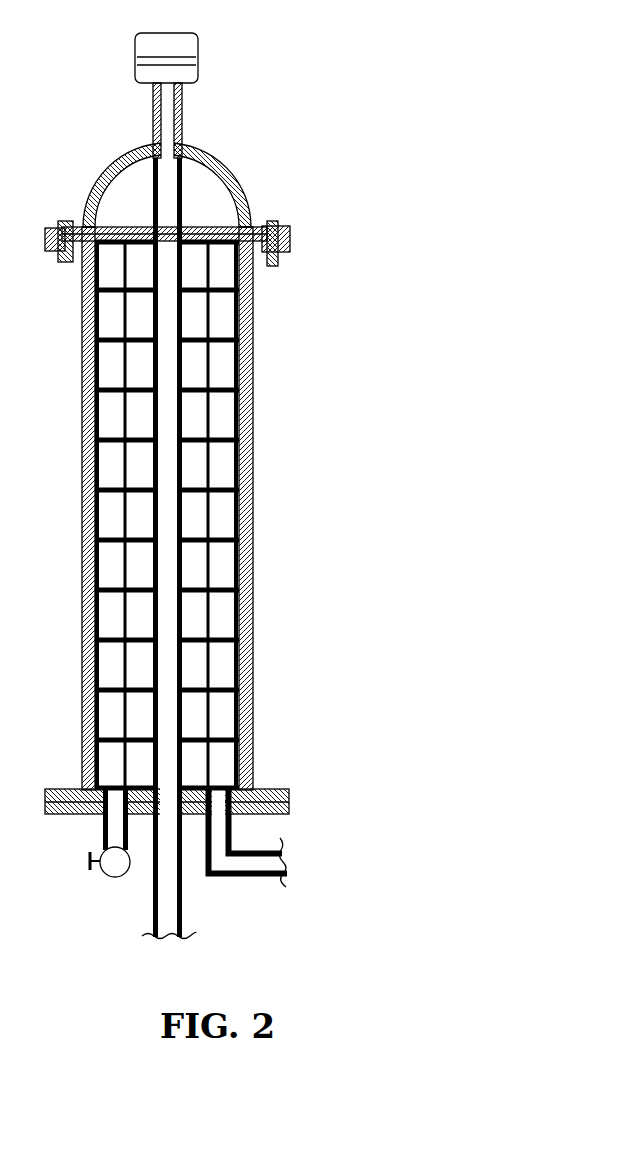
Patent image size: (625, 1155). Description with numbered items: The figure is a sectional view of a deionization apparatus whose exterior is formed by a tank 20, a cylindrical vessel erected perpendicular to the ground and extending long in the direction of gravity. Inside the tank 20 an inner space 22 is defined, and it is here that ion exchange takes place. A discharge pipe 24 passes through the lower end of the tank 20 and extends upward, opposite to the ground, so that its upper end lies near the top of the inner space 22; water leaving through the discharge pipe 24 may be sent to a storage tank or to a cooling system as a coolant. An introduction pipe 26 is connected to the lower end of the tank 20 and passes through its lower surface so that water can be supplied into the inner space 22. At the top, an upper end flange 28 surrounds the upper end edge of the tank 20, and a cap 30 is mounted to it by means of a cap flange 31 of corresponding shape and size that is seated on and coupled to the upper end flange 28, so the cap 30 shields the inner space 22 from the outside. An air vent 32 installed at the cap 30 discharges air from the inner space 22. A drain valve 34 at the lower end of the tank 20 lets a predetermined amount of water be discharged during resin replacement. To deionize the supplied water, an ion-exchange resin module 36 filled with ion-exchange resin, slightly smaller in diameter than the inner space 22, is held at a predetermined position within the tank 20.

The tank 20 is at (259, 436).
The inner space 22 is at (250, 470).
The discharge pipe 24 is at (183, 900).
The introduction pipe 26 is at (250, 878).
The upper end flange 28 is at (293, 249).
The cap 30 is at (240, 168).
The cap flange 31 is at (283, 225).
The air vent 32 is at (198, 44).
The drain valve 34 is at (103, 872).
The ion-exchange resin module 36 is at (247, 563).